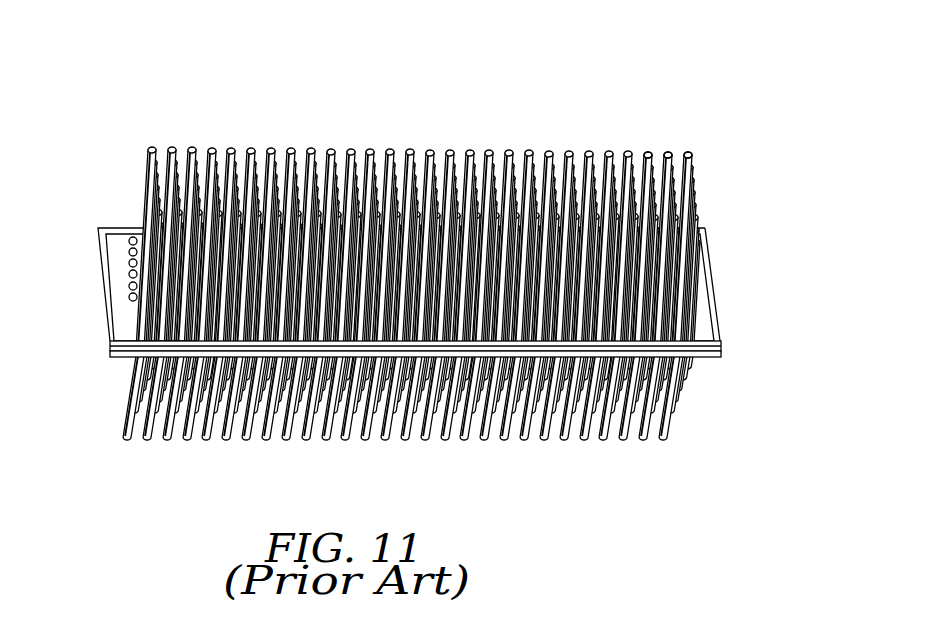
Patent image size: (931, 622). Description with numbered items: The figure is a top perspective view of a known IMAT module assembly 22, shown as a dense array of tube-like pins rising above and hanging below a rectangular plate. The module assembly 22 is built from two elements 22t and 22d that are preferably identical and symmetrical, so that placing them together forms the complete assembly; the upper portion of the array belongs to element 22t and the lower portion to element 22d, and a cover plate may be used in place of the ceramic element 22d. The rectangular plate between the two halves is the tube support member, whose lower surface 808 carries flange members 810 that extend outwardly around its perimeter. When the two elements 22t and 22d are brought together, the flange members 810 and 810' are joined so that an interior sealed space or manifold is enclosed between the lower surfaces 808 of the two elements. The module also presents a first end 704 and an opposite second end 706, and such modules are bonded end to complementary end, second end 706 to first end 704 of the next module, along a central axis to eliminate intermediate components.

The IMAT module assembly 22 is at (153, 452).
The element 22t is at (668, 133).
The ceramic element 22d is at (655, 450).
The first end 704 is at (103, 205).
The second end 706 is at (714, 238).
The lower surface 808 is at (702, 299).
The flange member 810 is at (459, 316).
The flange member 810' is at (444, 377).